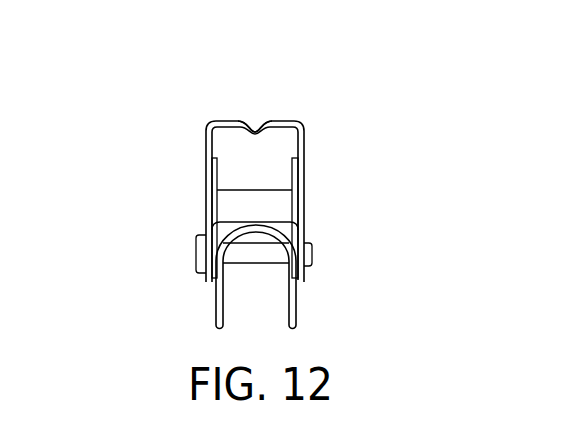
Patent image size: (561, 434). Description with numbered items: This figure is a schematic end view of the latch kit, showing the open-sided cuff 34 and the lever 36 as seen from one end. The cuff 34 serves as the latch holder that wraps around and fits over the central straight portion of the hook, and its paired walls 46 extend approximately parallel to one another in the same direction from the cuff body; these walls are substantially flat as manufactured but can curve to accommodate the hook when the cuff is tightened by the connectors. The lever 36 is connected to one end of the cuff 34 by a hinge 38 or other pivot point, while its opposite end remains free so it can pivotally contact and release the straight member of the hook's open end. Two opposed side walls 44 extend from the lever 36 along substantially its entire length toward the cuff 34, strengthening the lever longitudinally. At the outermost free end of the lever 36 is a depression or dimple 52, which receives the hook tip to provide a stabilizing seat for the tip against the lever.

The cuff 34 is at (261, 193).
The lever 36 is at (272, 140).
The hinge 38 is at (195, 250).
The side walls 44 is at (305, 183).
The walls 46 is at (298, 297).
The dimple 52 is at (255, 125).